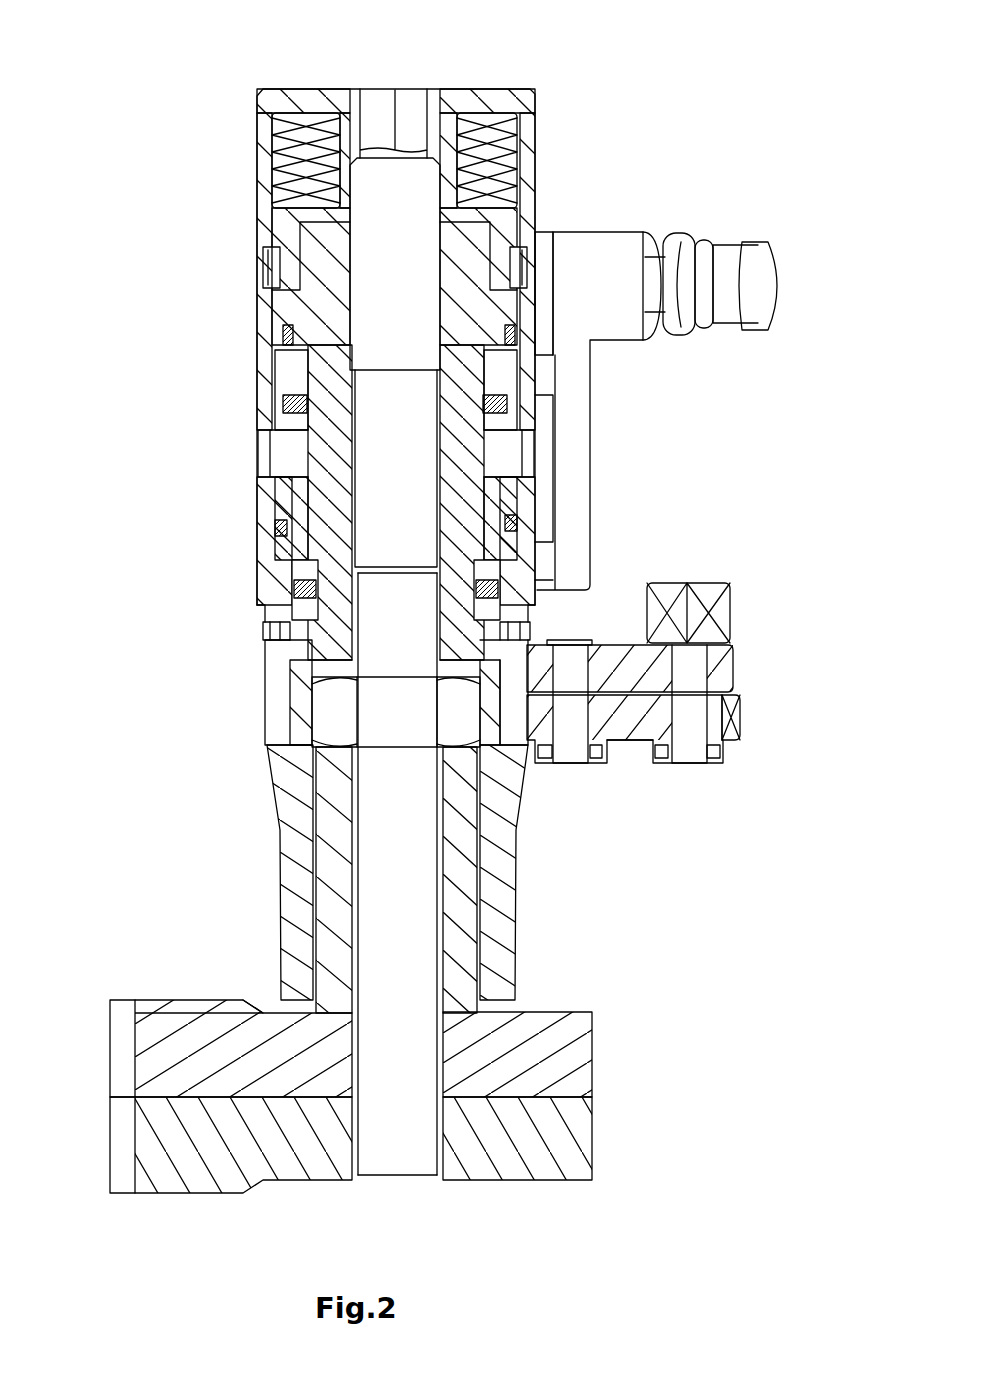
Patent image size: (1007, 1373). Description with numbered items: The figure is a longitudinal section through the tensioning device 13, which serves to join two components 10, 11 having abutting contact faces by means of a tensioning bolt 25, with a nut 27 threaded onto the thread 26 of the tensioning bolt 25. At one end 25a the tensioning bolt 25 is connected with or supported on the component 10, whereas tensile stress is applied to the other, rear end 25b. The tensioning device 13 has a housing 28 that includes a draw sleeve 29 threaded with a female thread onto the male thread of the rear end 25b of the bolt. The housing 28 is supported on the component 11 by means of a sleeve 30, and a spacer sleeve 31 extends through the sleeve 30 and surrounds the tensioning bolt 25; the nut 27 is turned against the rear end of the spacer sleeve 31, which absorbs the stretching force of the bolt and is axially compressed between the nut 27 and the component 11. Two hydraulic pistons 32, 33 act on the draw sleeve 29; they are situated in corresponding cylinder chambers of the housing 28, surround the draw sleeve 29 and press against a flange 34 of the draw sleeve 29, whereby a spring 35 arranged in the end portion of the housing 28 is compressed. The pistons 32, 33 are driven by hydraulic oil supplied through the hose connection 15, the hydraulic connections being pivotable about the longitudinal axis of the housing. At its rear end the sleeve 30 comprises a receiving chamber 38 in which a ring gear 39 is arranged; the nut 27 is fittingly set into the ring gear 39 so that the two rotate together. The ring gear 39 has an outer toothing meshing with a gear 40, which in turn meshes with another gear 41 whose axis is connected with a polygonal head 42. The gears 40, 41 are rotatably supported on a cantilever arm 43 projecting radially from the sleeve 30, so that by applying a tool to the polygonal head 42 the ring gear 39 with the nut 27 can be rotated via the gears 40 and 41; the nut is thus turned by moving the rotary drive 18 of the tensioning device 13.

The component 10 is at (565, 1140).
The component 11 is at (560, 1050).
The tensioning device 13 is at (588, 126).
The hose connection 15 is at (730, 275).
The rotary drive 18 is at (655, 777).
The tensioning bolt 25 is at (400, 913).
The end of tensioning bolt 25a is at (395, 1130).
The rear end of tensioning bolt 25b is at (385, 605).
The thread 26 is at (445, 965).
The nut 27 is at (556, 726).
The housing 28 is at (280, 385).
The draw sleeve 29 is at (340, 443).
The sleeve 30 is at (285, 860).
The spacer sleeve 31 is at (330, 930).
The hydraulic piston 32 is at (290, 500).
The hydraulic piston 33 is at (290, 305).
The flange 34 is at (315, 258).
The spring 35 is at (285, 125).
The receiving chamber 38 is at (290, 650).
The ring gear 39 is at (300, 710).
The gear 40 is at (615, 718).
The gear 41 is at (724, 720).
The polygonal head 42 is at (720, 615).
The cantilever arm 43 is at (620, 668).